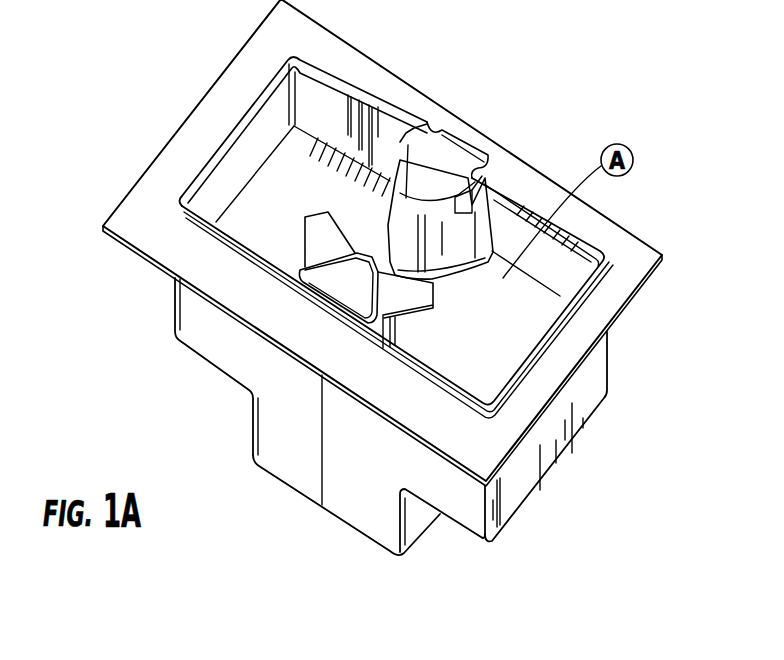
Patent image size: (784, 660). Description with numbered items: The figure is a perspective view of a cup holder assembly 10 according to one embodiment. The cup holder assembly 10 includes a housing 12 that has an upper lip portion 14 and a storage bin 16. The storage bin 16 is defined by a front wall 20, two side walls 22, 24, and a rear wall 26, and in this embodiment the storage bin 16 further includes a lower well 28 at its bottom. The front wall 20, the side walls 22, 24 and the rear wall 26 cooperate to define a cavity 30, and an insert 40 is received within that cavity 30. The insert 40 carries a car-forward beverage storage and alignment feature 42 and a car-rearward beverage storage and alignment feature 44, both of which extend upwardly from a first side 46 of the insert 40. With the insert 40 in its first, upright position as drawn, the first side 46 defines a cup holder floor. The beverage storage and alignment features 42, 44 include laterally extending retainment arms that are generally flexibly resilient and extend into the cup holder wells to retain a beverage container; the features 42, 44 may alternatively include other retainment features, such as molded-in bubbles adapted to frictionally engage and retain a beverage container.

The cup holder assembly 10 is at (524, 100).
The housing 12 is at (624, 226).
The upper lip portion 14 is at (631, 268).
The storage bin 16 is at (585, 407).
The front wall 20 is at (287, 470).
The side wall 22 is at (530, 472).
The side wall 24 is at (218, 178).
The rear wall 26 is at (337, 103).
The lower well 28 is at (417, 530).
The cavity 30 is at (519, 324).
The insert 40 is at (277, 166).
The car-forward beverage storage and alignment feature 42 is at (333, 283).
The car-rearward beverage storage and alignment feature 44 is at (443, 163).
The first side 46 is at (364, 212).